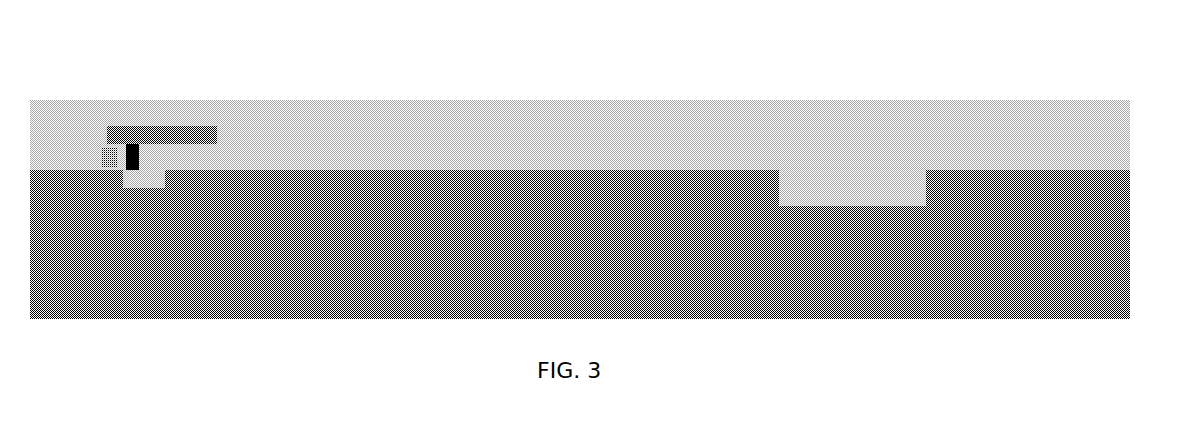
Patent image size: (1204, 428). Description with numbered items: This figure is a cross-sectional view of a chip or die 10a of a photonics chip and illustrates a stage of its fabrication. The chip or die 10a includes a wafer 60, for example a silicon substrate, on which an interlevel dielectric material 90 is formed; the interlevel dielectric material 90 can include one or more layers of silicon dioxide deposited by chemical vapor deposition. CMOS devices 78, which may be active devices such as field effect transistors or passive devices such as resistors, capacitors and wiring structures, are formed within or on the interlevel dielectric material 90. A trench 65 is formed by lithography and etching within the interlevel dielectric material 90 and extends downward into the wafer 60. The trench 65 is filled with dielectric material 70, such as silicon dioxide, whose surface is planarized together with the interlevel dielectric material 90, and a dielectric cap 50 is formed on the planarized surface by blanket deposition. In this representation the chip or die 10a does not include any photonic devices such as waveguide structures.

The chip or die 10a is at (616, 210).
The dielectric cap 50 is at (507, 98).
The wafer 60 is at (913, 303).
The trench 65 is at (918, 128).
The dielectric material 70 is at (807, 121).
The CMOS devices 78 is at (182, 139).
The interlevel dielectric material 90 is at (391, 132).